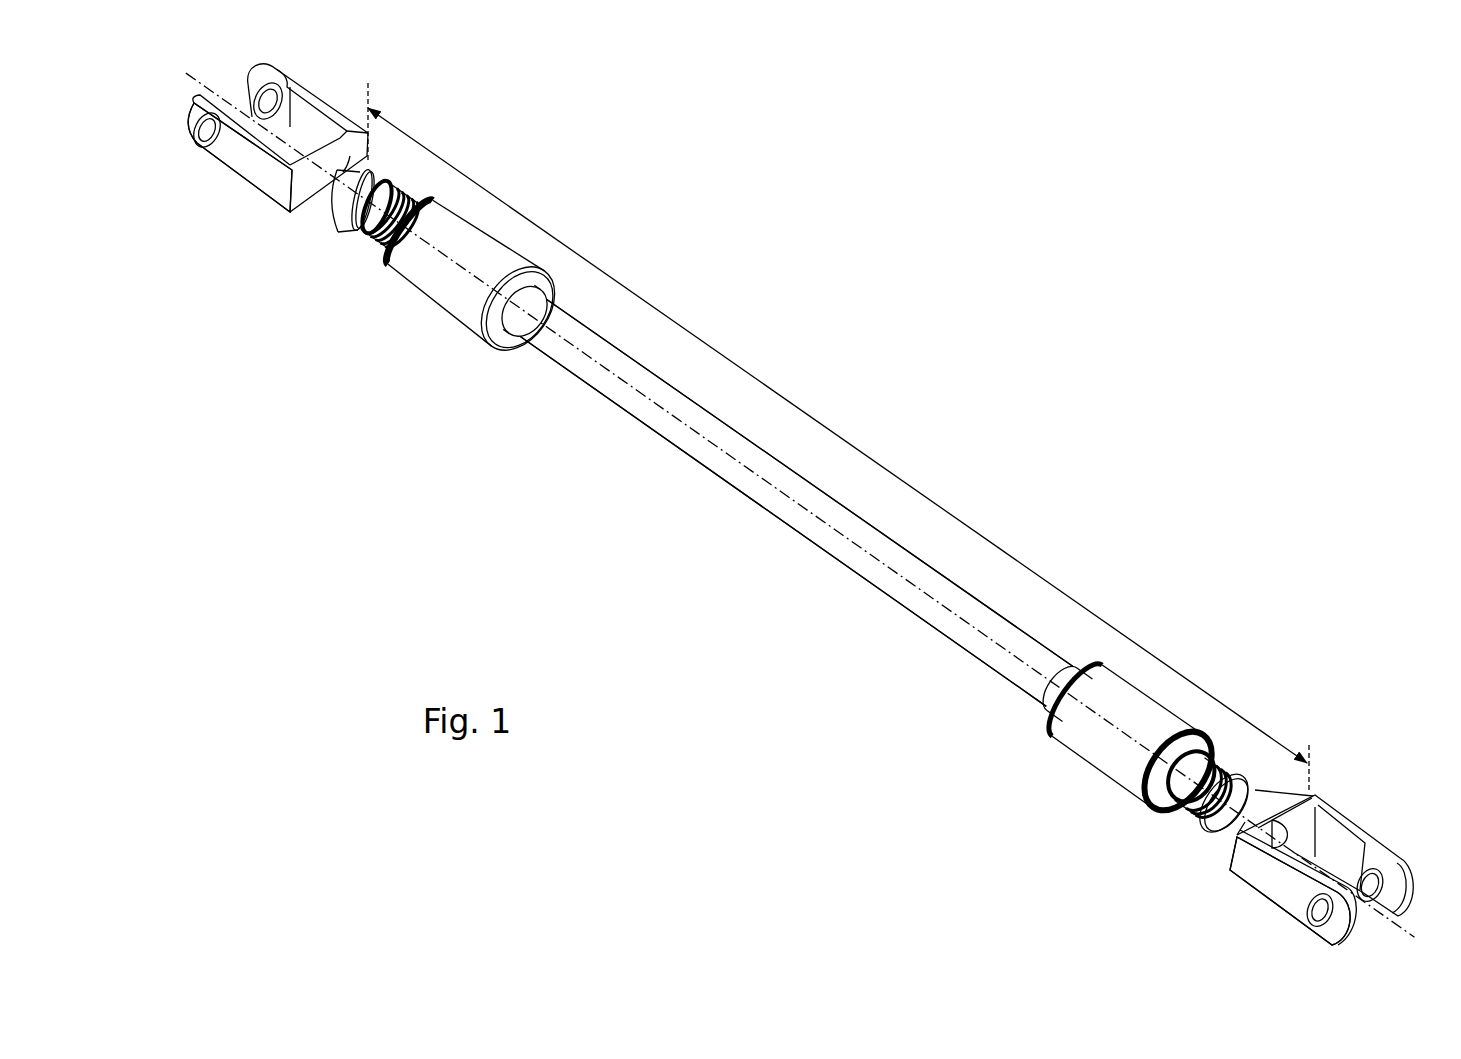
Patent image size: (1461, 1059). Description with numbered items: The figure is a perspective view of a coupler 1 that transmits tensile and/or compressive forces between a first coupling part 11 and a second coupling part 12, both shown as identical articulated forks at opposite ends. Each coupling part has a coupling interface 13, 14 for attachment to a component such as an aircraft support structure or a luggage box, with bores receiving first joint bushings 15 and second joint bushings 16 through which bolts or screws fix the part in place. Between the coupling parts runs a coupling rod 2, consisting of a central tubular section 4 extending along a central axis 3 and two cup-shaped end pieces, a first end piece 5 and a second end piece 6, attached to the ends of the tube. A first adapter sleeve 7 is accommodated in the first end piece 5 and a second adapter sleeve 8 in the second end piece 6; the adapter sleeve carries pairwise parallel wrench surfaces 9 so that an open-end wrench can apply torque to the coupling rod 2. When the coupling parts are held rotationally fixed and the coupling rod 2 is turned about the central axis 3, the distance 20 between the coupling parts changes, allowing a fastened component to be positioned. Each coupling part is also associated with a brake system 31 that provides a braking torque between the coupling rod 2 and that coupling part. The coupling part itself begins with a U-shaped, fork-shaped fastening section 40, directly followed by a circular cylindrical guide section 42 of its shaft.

The coupler 1 is at (783, 511).
The coupling rod 2 is at (732, 442).
The central axis 3 is at (925, 592).
The tubular section 4 is at (823, 503).
The first end piece 5 is at (1128, 705).
The second end piece 6 is at (474, 244).
The first adapter sleeve 7 is at (1196, 746).
The second adapter sleeve 8 is at (426, 194).
The wrench surfaces 9 is at (1130, 765).
The first coupling part 11 is at (1340, 813).
The second coupling part 12 is at (262, 165).
The coupling interface 13 is at (1362, 917).
The coupling interface 14 is at (242, 97).
The first joint bushings 15 is at (1382, 876).
The second joint bushings 16 is at (193, 136).
The distance 20 is at (642, 300).
The brake system 31 is at (366, 264).
The fastening section 40 is at (227, 153).
The guide section 42 is at (343, 205).